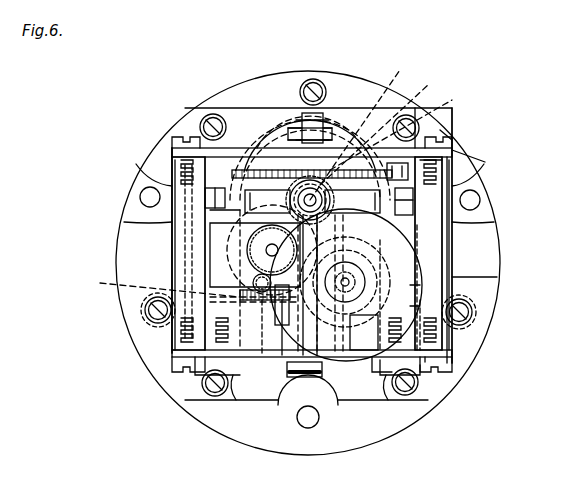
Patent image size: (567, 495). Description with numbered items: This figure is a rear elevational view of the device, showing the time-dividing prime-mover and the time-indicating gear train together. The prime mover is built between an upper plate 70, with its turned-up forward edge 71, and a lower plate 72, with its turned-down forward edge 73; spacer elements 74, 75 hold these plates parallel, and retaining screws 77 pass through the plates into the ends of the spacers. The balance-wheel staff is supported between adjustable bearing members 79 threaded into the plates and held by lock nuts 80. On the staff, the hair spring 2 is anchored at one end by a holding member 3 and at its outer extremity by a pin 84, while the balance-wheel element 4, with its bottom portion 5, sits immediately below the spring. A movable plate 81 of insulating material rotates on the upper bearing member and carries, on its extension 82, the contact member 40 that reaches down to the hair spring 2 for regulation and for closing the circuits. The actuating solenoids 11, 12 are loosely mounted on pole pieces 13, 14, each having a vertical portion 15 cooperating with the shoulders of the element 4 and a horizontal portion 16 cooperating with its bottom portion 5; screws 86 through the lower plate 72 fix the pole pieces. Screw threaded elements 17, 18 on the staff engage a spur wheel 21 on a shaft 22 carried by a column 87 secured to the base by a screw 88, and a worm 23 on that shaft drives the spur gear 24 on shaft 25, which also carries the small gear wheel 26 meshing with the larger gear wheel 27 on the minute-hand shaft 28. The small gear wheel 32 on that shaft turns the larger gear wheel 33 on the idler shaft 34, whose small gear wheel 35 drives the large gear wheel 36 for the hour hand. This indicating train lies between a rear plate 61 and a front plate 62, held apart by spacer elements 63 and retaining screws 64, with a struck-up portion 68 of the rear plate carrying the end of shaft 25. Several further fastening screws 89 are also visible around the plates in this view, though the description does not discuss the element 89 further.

The hair spring 2 is at (255, 160).
The holding member 3 is at (432, 168).
The balance-wheel element 4 is at (400, 200).
The bottom portion 5 is at (246, 240).
The actuating solenoid 11 is at (172, 248).
The actuating solenoid 12 is at (452, 253).
The pole piece 13 is at (200, 188).
The pole piece 14 is at (432, 188).
The vertical portion 15 is at (183, 163).
The horizontal portion 16 is at (230, 215).
The screw threaded element 17 is at (360, 292).
The screw threaded element 18 is at (364, 280).
The spur wheel 21 is at (284, 358).
The shaft 22 is at (262, 358).
The worm 23 is at (266, 304).
The spur gear 24 is at (191, 288).
The shaft 25 is at (248, 252).
The small gear wheel 26 is at (254, 282).
The larger gear wheel 27 is at (383, 124).
The shaft 28 is at (352, 201).
The small gear wheel 32 is at (365, 125).
The larger gear wheel 33 is at (420, 252).
The idler shaft 34 is at (416, 286).
The small gear wheel 35 is at (416, 307).
The large gear wheel 36 is at (397, 126).
The contact member 40 is at (313, 196).
The rear plate 61 is at (124, 222).
The front plate 62 is at (140, 183).
The spacer element 63 is at (312, 78).
The retaining screw 64 is at (292, 75).
The struck-up portion 68 is at (267, 201).
The upper plate 70 is at (408, 170).
The turned-up forward edge 71 is at (440, 125).
The lower plate 72 is at (454, 360).
The turned-down forward edge 73 is at (262, 408).
The spacer element 74 is at (170, 345).
The spacer element 75 is at (497, 277).
The retaining screw 77 is at (176, 138).
The adjustable bearing member 79 is at (322, 132).
The lock nut 80 is at (300, 118).
The movable plate 81 is at (314, 196).
The extension 82 is at (290, 132).
The pin 84 is at (440, 176).
The screw 86 is at (232, 410).
The column 87 is at (364, 334).
The screw 88 is at (372, 376).
The screw 89 is at (212, 114).